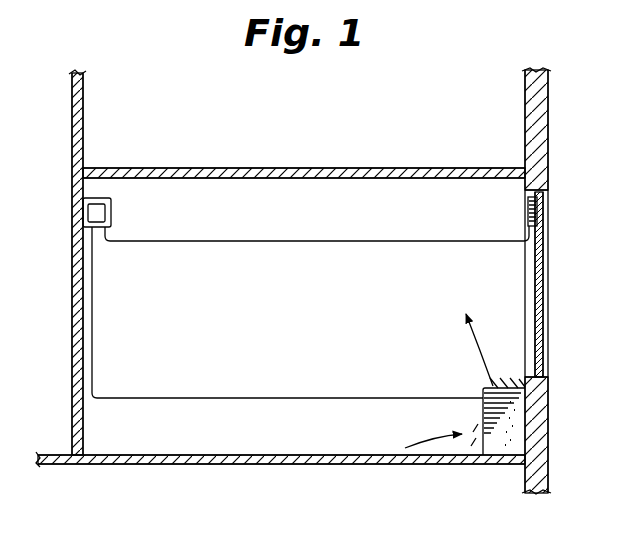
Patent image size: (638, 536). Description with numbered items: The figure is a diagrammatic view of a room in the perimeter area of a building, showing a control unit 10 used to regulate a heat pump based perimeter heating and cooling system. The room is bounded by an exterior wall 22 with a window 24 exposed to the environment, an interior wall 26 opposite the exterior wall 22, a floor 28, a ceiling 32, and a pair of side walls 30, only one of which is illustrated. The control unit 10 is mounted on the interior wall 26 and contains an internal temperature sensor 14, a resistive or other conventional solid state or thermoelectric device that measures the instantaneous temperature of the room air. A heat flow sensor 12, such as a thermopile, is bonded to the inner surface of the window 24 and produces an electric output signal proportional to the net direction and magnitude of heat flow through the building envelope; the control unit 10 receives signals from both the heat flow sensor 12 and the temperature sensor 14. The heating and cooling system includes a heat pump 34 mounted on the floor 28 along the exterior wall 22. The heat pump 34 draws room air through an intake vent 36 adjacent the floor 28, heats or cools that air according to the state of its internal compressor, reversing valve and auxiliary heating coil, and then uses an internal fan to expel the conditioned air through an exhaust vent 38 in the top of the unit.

The control unit 10 is at (128, 205).
The heat flow sensor 12 is at (527, 216).
The temperature sensor 14 is at (98, 214).
The exterior wall 22 is at (538, 122).
The window 24 is at (541, 292).
The interior wall 26 is at (72, 327).
The floor 28 is at (224, 465).
The side wall 30 is at (328, 297).
The ceiling 32 is at (337, 168).
The heat pump 34 is at (505, 422).
The intake vent 36 is at (478, 447).
The exhaust vent 38 is at (490, 380).